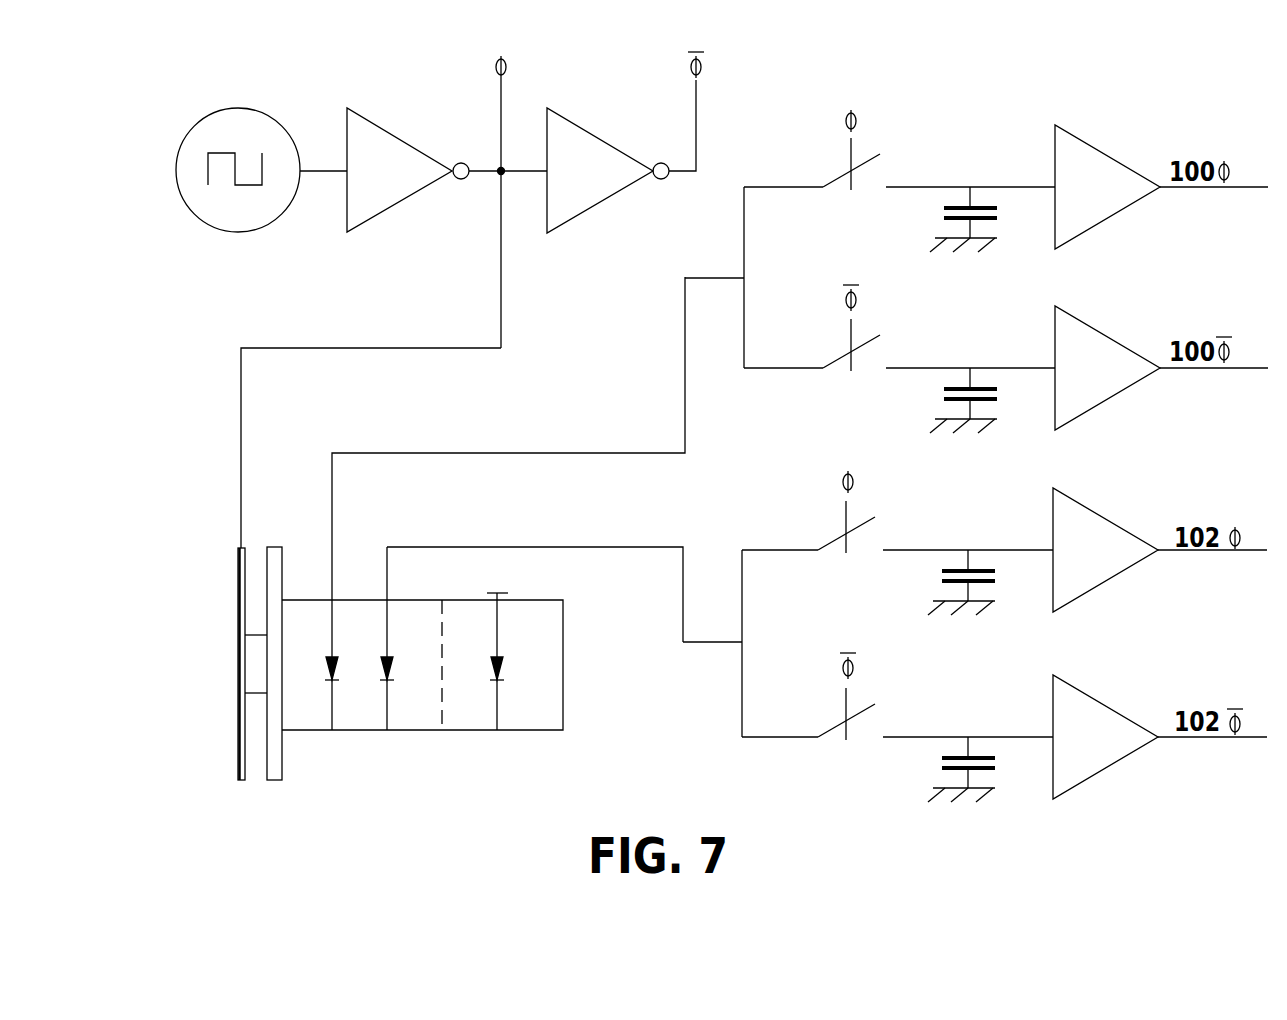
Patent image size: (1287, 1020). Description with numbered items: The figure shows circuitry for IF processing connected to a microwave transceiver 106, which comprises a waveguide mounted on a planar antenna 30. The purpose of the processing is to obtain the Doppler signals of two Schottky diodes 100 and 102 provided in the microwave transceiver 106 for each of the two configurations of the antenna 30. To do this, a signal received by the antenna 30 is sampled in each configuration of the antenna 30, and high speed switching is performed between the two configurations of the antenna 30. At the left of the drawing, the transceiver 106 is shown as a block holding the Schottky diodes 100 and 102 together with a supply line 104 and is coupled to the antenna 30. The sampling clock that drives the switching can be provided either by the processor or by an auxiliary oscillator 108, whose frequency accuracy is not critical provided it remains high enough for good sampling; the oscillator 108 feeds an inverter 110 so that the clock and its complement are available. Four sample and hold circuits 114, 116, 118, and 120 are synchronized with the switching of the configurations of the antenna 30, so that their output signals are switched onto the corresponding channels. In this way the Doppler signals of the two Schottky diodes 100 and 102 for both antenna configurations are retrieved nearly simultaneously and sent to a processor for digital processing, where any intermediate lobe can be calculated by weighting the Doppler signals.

The planar antenna 30 is at (238, 662).
The Schottky diode 100 is at (326, 742).
The Schottky diode 102 is at (386, 747).
The +5V supply line 104 is at (497, 743).
The microwave transceiver 106 is at (563, 665).
The auxiliary oscillator 108 is at (237, 127).
The inverter 110 is at (382, 160).
The sample and hold circuit 114 is at (963, 204).
The sample and hold circuit 116 is at (963, 384).
The sample and hold circuit 118 is at (961, 565).
The sample and hold circuit 120 is at (961, 753).